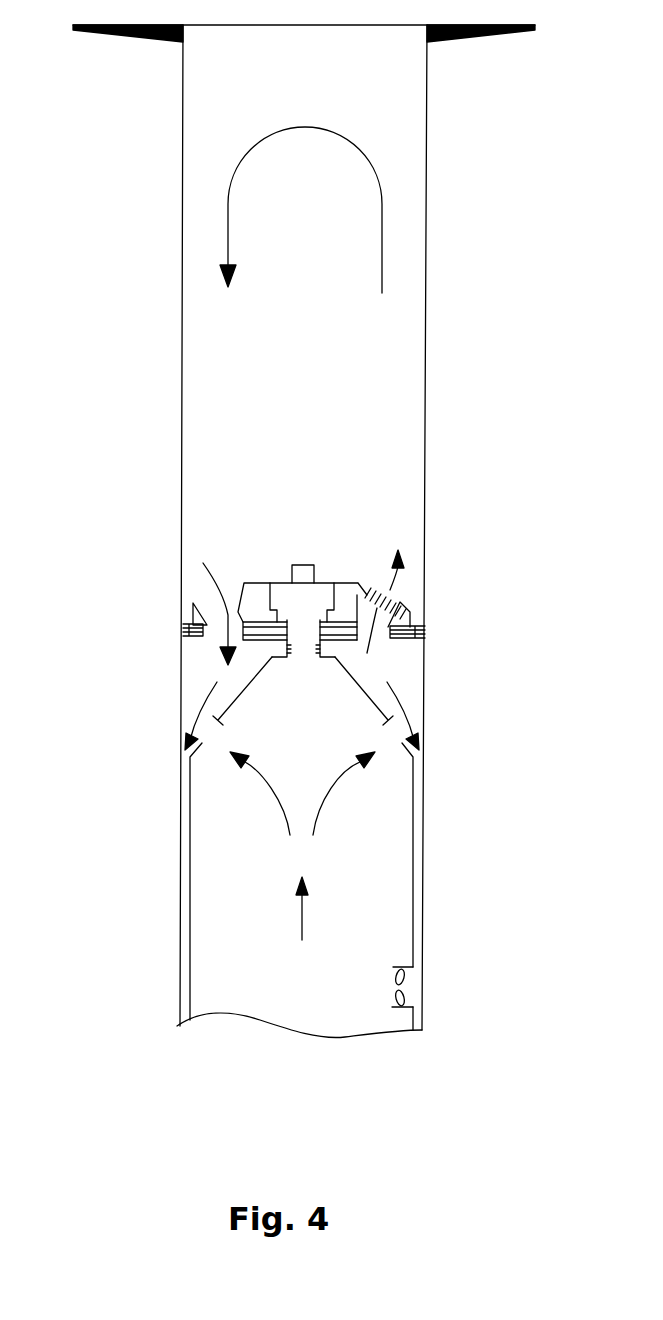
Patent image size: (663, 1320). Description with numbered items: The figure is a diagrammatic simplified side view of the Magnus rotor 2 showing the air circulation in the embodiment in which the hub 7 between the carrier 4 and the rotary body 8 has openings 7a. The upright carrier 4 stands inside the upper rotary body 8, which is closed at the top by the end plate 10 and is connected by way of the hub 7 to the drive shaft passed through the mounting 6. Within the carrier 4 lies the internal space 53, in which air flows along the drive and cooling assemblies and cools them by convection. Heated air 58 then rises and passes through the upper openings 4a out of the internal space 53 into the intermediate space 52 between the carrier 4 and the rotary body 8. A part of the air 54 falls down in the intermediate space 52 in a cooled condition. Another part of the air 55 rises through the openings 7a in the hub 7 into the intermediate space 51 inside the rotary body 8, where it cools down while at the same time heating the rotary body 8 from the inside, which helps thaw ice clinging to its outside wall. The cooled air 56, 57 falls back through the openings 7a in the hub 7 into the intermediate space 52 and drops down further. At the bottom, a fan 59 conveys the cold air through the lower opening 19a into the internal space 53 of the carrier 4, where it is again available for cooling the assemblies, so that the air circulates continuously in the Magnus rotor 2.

The Magnus rotor 2 is at (90, 190).
The carrier 4 is at (262, 982).
The upper openings 4a is at (200, 733).
The mounting 6 is at (318, 610).
The hub 7 is at (262, 600).
The openings 7a is at (207, 607).
The rotary body 8 is at (426, 285).
The end plate 10 is at (472, 37).
The lower opening 19a is at (417, 987).
The intermediate space 51 is at (383, 407).
The intermediate space 52 is at (202, 665).
The internal space 53 is at (393, 916).
The air 54 is at (405, 702).
The air 55 is at (407, 547).
The cooled air 56 is at (385, 178).
The cooled air 57 is at (210, 575).
The heated air 58 is at (352, 793).
The fan 59 is at (397, 995).